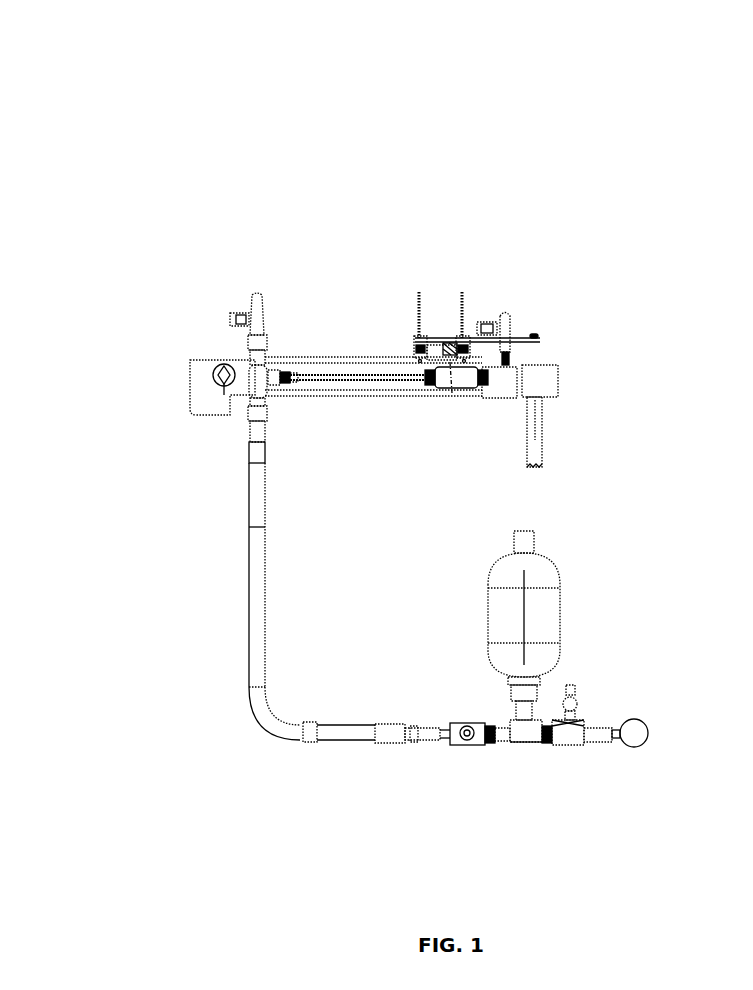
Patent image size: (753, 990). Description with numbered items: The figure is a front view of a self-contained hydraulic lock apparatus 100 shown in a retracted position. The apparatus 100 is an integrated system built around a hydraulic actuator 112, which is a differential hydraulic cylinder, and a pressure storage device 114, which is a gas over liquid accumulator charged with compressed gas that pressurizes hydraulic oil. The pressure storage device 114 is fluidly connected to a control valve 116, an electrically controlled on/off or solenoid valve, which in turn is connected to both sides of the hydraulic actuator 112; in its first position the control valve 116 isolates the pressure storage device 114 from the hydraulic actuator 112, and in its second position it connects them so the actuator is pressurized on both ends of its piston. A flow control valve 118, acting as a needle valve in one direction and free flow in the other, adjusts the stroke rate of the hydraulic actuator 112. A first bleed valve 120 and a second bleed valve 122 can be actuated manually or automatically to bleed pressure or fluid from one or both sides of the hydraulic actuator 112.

The self-contained hydraulic lock apparatus 100 is at (135, 137).
The hydraulic actuator 112 is at (332, 355).
The pressure storage device 114 is at (550, 608).
The control valve 116 is at (507, 378).
The flow control valve 118 is at (453, 372).
The first bleed valve 120 is at (230, 314).
The second bleed valve 122 is at (485, 322).